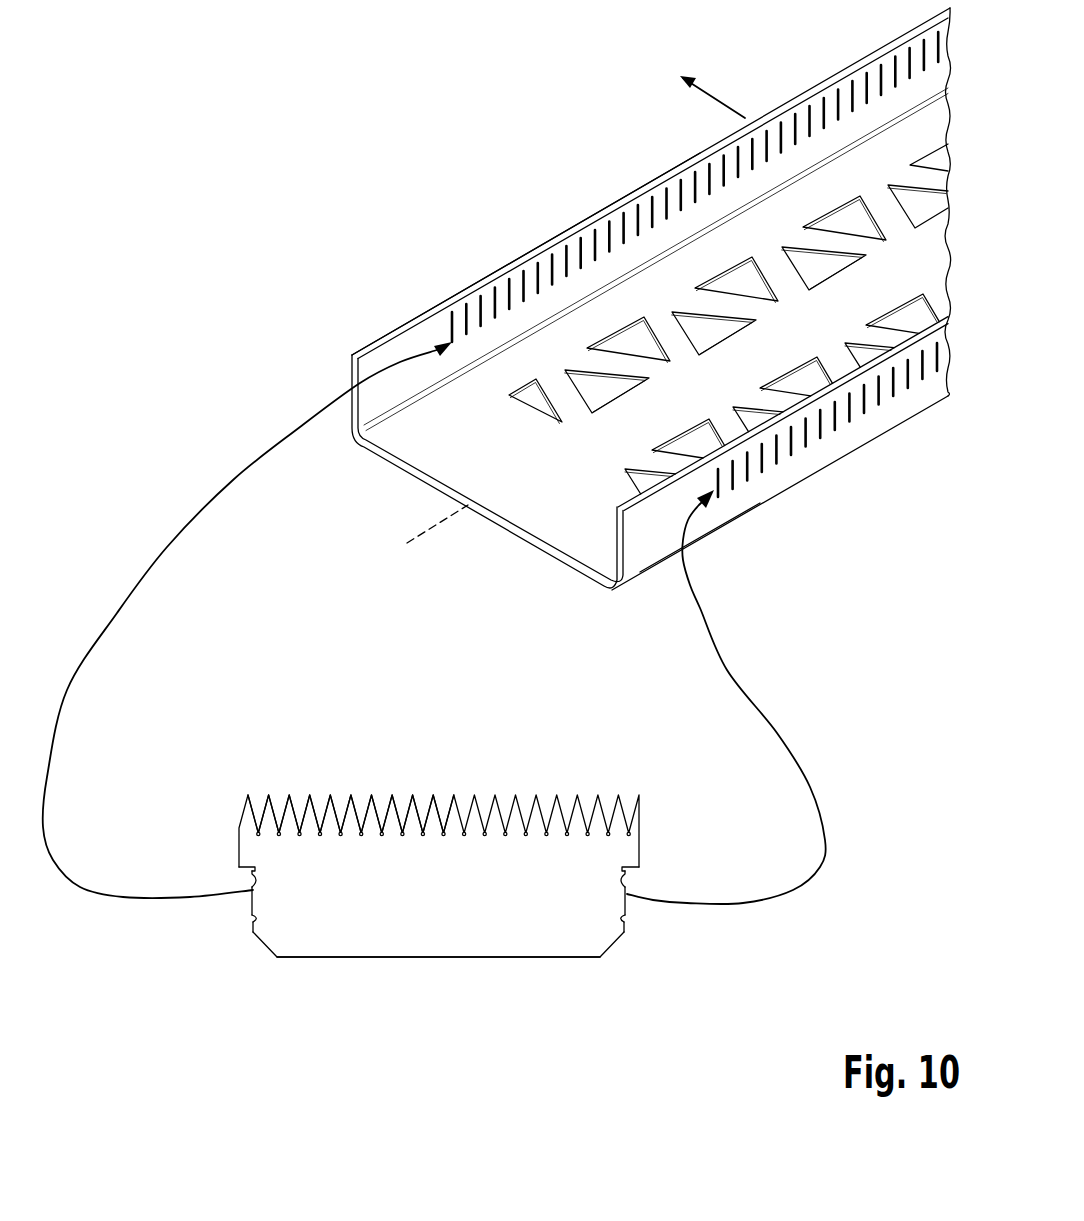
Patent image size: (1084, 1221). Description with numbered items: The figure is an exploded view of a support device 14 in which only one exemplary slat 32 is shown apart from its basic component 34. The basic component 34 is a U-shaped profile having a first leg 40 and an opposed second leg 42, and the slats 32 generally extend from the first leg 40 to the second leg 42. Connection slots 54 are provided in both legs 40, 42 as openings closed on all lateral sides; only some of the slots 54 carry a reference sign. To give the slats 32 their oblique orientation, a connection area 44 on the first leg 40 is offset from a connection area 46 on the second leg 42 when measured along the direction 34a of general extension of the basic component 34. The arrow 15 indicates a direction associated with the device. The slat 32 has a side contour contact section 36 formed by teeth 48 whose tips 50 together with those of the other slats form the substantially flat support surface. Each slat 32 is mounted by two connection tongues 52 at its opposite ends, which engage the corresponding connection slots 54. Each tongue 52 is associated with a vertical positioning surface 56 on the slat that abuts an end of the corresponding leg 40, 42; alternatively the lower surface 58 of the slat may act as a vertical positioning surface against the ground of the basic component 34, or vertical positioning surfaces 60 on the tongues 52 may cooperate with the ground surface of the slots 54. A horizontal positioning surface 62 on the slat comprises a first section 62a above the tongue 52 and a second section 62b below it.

The support device 14 is at (665, 158).
The insertion direction 15 is at (700, 84).
The slat 32 is at (522, 593).
The basic component 34 is at (790, 493).
The direction of general extension 34a is at (418, 537).
The side contour contact section 36 is at (436, 756).
The first leg 40 is at (508, 262).
The second leg 42 is at (815, 453).
The connection area 44 is at (415, 318).
The connection area 46 is at (695, 528).
The teeth 48 is at (443, 830).
The tips 50 is at (270, 794).
The connection tongue 52 is at (257, 898).
The connection slot 54 is at (575, 248).
The vertical positioning surface 56 is at (240, 867).
The lower surface 58 is at (408, 958).
The vertical positioning surface 60 is at (254, 918).
The horizontal positioning surface 62 is at (440, 950).
The first section 62a is at (256, 880).
The second section 62b is at (254, 932).